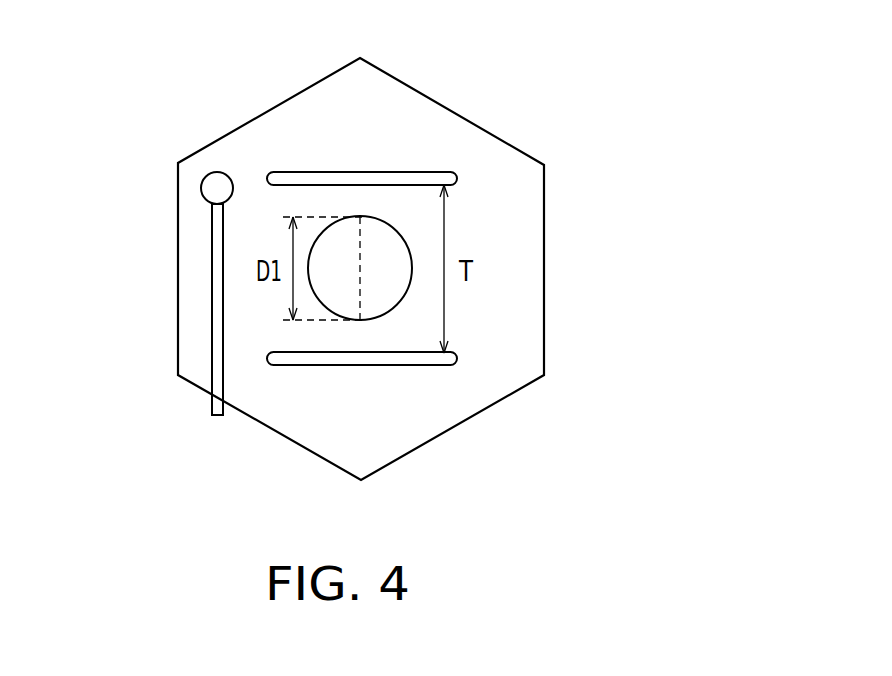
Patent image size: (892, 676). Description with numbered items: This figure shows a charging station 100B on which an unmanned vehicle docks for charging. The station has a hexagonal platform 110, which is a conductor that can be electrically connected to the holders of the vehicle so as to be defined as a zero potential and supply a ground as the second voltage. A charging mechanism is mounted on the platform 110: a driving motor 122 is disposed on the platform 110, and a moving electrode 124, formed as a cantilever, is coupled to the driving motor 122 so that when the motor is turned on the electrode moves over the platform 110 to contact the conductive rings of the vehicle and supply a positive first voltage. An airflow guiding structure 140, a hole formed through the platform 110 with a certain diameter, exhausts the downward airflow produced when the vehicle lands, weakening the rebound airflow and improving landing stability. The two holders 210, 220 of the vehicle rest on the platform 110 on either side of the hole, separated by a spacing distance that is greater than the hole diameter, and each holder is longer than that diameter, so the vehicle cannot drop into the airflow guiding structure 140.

The charging station 100B is at (630, 196).
The platform 110 is at (528, 322).
The driving motor 122 is at (217, 188).
The moving electrode 124 is at (218, 303).
The airflow guiding structure 140 is at (380, 243).
The first holder 210 is at (407, 360).
The second holder 220 is at (328, 180).